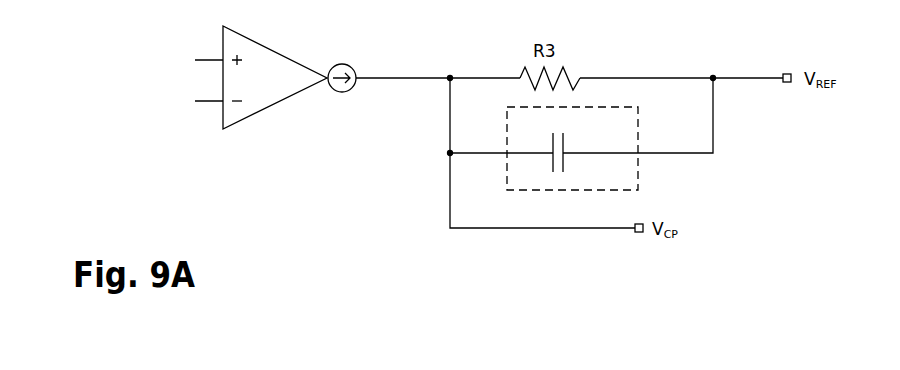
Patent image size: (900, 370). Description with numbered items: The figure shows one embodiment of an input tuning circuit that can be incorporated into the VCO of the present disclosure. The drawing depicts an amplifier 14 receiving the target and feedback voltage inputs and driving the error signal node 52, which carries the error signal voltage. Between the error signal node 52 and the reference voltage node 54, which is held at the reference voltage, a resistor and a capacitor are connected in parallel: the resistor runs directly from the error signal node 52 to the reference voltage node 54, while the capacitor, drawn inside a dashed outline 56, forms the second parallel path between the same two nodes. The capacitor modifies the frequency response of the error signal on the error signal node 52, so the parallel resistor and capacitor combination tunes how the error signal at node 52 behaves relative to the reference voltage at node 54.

The error amplifier 14 is at (270, 107).
The error signal node 52 is at (450, 77).
The reference voltage node 54 is at (740, 77).
The compensation capacitor network 56 is at (640, 172).